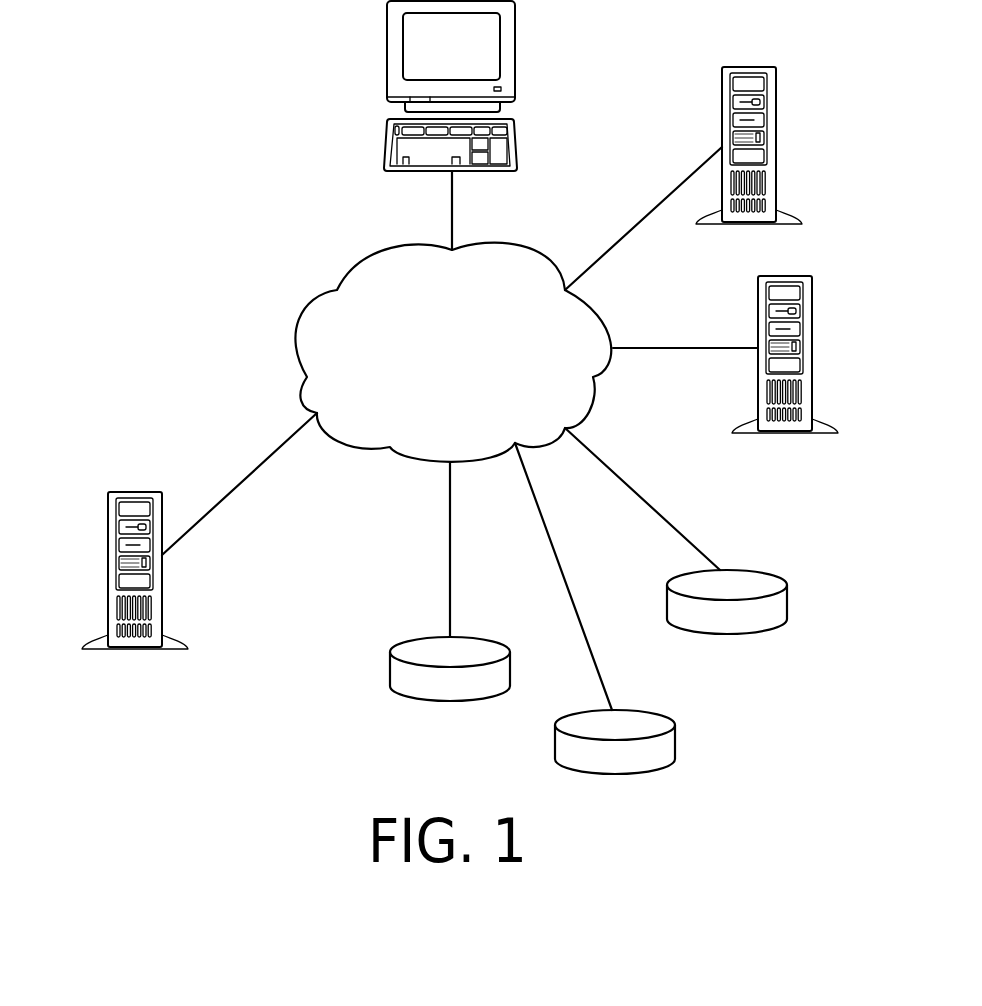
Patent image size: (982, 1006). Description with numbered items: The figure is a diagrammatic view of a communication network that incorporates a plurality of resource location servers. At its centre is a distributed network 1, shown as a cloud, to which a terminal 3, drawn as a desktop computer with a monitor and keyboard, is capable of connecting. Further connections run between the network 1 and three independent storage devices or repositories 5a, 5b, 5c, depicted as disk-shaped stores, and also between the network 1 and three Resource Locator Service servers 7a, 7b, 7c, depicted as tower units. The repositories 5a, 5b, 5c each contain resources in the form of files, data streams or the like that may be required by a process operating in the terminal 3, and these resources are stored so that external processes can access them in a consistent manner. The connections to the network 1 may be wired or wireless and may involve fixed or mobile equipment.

The distributed network 1 is at (459, 365).
The terminal 3 is at (516, 50).
The repository 5a is at (391, 666).
The repository 5b is at (555, 743).
The repository 5c is at (788, 600).
The Resource Locator Service server 7a is at (777, 145).
The Resource Locator Service server 7b is at (813, 355).
The Resource Locator Service server 7c is at (107, 566).